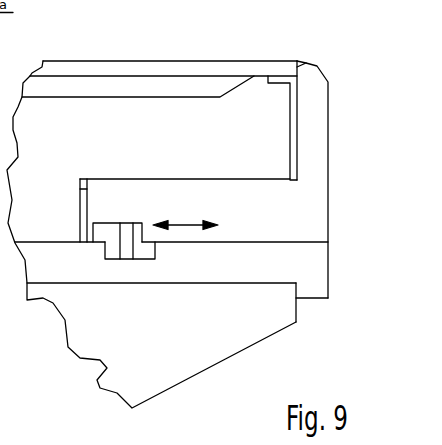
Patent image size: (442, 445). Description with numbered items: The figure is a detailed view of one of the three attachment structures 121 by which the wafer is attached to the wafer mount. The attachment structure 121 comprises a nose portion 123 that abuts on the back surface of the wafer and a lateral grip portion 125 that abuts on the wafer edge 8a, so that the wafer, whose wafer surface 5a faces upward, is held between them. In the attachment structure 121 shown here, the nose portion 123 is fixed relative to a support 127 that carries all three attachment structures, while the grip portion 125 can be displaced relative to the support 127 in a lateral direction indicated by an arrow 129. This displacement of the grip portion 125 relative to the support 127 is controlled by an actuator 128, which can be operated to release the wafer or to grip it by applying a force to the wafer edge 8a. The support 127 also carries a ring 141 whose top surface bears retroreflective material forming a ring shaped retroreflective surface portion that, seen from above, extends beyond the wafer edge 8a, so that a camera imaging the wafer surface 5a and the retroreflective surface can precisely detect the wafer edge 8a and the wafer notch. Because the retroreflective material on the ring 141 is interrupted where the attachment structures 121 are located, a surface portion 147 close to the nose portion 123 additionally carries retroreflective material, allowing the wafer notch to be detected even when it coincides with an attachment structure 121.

The wafer surface 5a is at (122, 60).
The wafer edge 8a is at (306, 63).
The attachment structure 121 is at (357, 92).
The nose portion 123 is at (260, 75).
The grip portion 125 is at (329, 125).
The support 127 is at (298, 313).
The actuator 128 is at (120, 232).
The arrow 129 is at (183, 226).
The ring 141 is at (329, 263).
The surface portion 147 is at (280, 83).